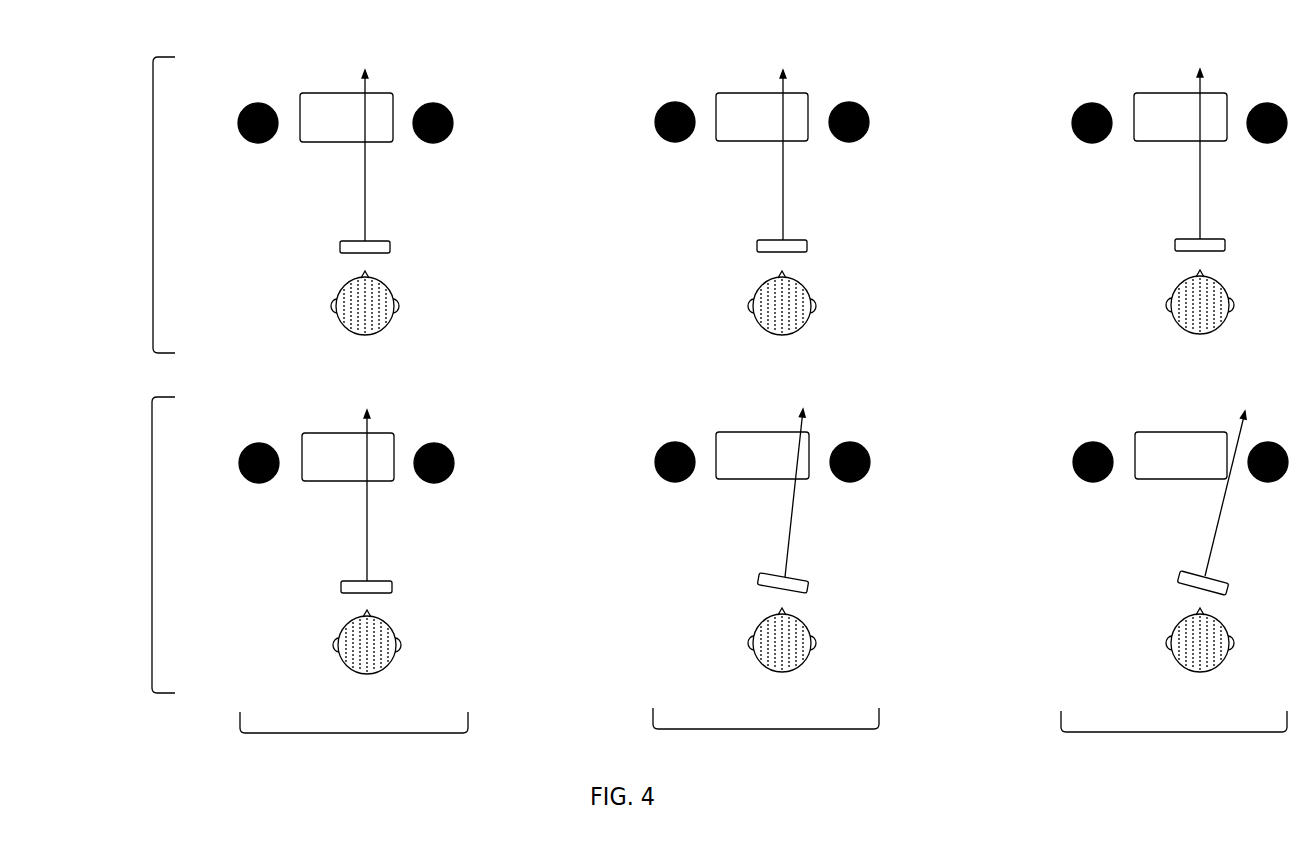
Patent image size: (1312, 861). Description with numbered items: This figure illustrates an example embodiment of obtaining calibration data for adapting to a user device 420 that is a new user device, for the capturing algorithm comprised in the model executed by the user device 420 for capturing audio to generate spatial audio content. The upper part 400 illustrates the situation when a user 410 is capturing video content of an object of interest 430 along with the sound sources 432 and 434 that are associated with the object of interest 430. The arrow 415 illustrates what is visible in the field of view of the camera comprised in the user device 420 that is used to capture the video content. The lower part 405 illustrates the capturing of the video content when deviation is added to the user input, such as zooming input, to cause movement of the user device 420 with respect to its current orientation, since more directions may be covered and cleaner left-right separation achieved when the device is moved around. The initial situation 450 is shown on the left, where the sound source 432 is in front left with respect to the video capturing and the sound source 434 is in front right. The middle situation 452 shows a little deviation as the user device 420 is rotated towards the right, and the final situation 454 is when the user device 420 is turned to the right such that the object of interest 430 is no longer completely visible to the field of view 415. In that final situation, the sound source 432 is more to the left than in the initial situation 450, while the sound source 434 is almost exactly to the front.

The upper part 400 is at (153, 205).
The lower part 405 is at (152, 546).
The user 410 is at (754, 472).
The arrow 415 is at (811, 325).
The user device 420 is at (808, 420).
The object of interest 430 is at (763, 273).
The sound source 432 is at (674, 274).
The sound source 434 is at (857, 274).
The initial situation 450 is at (354, 733).
The middle situation 452 is at (766, 729).
The final situation 454 is at (1173, 732).